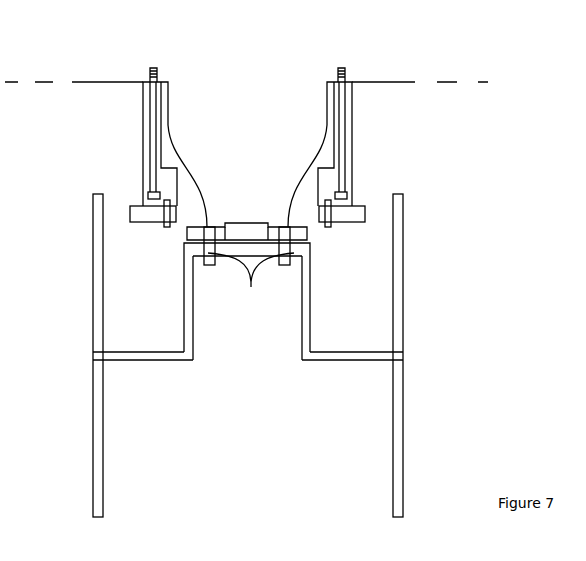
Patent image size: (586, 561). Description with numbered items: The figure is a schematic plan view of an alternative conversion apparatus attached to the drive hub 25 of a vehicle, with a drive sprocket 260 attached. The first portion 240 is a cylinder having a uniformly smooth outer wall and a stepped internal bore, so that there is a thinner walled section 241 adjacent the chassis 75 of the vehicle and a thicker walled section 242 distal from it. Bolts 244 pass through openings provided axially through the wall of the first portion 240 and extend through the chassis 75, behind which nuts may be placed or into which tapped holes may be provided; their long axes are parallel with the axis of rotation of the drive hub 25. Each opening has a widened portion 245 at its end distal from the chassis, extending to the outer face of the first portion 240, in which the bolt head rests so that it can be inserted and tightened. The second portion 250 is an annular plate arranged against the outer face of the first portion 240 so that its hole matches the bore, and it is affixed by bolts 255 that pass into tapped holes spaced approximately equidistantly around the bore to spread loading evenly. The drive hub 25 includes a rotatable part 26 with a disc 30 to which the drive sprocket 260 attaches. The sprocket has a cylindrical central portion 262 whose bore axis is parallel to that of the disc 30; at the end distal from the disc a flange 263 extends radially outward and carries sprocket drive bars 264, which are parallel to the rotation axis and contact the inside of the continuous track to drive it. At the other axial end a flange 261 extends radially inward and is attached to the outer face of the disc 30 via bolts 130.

The drive hub 25 is at (255, 152).
The rotatable part 26 is at (239, 226).
The disc 30 is at (273, 223).
The chassis 75 is at (393, 78).
The bolts 130 is at (251, 277).
The first portion 240 is at (353, 108).
The thinner walled section 241 is at (146, 110).
The thicker walled section 242 is at (148, 184).
The bolts 244 is at (347, 132).
The widened portion 245 is at (343, 198).
The second portion 250 is at (140, 224).
The bolts 255 is at (166, 229).
The drive sprocket 260 is at (257, 355).
The flange 261 is at (307, 250).
The cylindrical central portion 262 is at (307, 296).
The flange 263 is at (137, 357).
The sprocket drive bars 264 is at (397, 252).